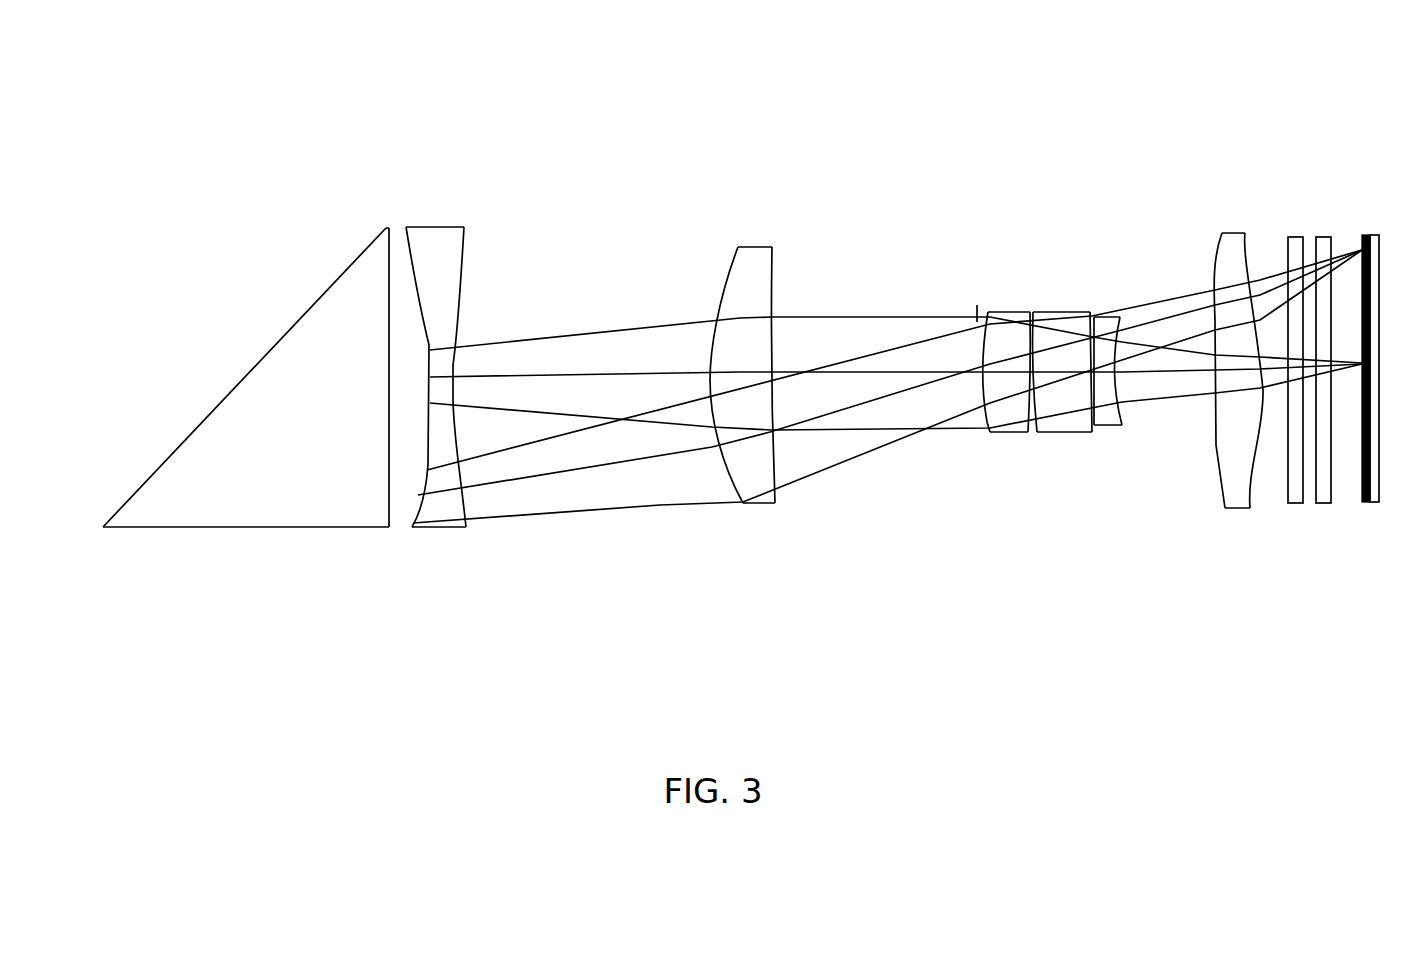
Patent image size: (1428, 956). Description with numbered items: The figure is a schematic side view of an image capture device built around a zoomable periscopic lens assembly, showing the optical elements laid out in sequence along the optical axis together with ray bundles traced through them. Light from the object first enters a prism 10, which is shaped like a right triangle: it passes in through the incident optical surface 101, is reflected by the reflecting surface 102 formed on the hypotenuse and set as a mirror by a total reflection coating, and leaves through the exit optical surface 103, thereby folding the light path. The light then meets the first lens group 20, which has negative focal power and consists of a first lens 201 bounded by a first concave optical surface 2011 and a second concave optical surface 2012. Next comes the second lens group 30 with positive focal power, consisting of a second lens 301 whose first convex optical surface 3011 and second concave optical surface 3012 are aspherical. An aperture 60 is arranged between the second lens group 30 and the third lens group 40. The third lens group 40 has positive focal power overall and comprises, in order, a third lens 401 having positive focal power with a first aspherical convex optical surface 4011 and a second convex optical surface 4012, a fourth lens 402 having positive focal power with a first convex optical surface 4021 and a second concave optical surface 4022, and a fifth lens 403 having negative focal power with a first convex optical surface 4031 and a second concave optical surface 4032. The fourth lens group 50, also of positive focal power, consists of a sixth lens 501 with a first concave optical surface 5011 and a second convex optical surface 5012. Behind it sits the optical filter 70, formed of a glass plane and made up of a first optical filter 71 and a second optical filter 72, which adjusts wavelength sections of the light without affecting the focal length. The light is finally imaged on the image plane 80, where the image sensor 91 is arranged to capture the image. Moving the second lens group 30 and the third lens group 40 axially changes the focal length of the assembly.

The prism 10 is at (261, 355).
The incident optical surface 101 is at (245, 528).
The reflecting surface 102 is at (220, 400).
The exit optical surface 103 is at (390, 277).
The first lens group 20 is at (466, 377).
The first lens 201 is at (466, 427).
The first concave optical surface 2011 is at (412, 515).
The second concave optical surface 2012 is at (465, 497).
The second lens group 30 is at (780, 373).
The second lens 301 is at (780, 423).
The first convex optical surface 3011 is at (730, 477).
The second concave optical surface 3012 is at (773, 453).
The third lens group 40 is at (1050, 360).
The third lens 401 is at (961, 420).
The first aspherical convex optical surface 4011 is at (987, 422).
The second convex optical surface 4012 is at (1030, 420).
The fourth lens 402 is at (1045, 420).
The first convex optical surface 4021 is at (1036, 415).
The second concave optical surface 4022 is at (1092, 413).
The fifth lens 403 is at (1148, 420).
The first convex optical surface 4031 is at (1096, 420).
The second concave optical surface 4032 is at (1122, 425).
The fourth lens group 50 is at (1259, 367).
The sixth lens 501 is at (1259, 413).
The first concave optical surface 5011 is at (1217, 487).
The second convex optical surface 5012 is at (1248, 483).
The aperture 60 is at (983, 427).
The optical filter 70 is at (1307, 309).
The first optical filter 71 is at (1287, 235).
The second optical filter 72 is at (1327, 334).
The image plane 80 is at (1379, 357).
The image sensor 91 is at (1375, 502).